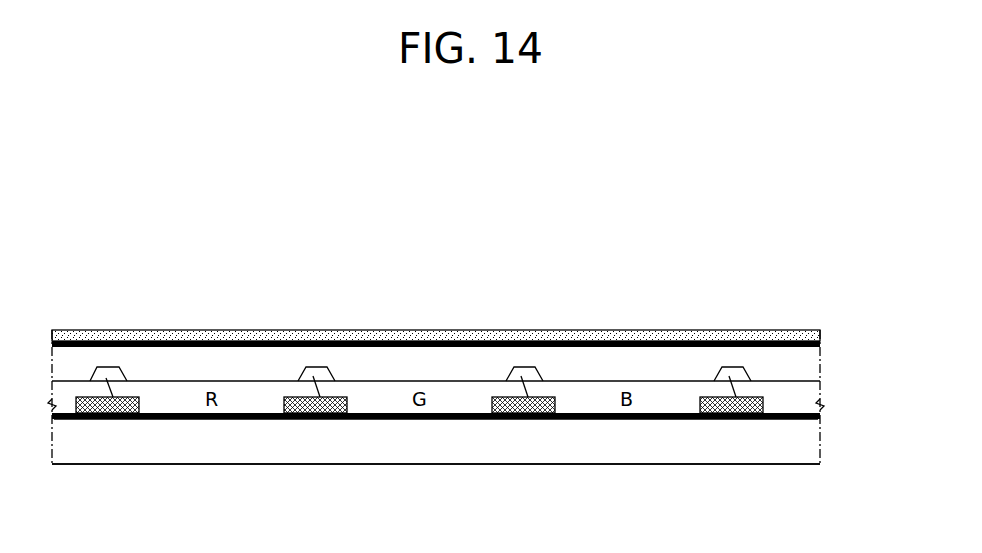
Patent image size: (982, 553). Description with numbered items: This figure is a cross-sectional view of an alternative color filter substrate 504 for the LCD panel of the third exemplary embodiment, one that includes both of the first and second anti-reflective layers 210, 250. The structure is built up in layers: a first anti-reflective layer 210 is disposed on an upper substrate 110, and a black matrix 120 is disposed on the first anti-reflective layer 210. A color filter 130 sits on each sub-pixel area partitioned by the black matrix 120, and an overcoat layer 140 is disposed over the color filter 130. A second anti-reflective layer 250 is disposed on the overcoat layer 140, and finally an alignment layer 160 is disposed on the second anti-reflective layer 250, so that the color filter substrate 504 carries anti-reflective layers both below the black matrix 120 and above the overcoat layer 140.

The color filter substrate 504 is at (832, 375).
The upper substrate 110 is at (437, 457).
The black matrix 120 is at (525, 419).
The color filter 130 is at (605, 405).
The overcoat layer 140 is at (353, 378).
The alignment layer 160 is at (272, 347).
The first anti-reflective layer 210 is at (188, 419).
The second anti-reflective layer 250 is at (687, 347).